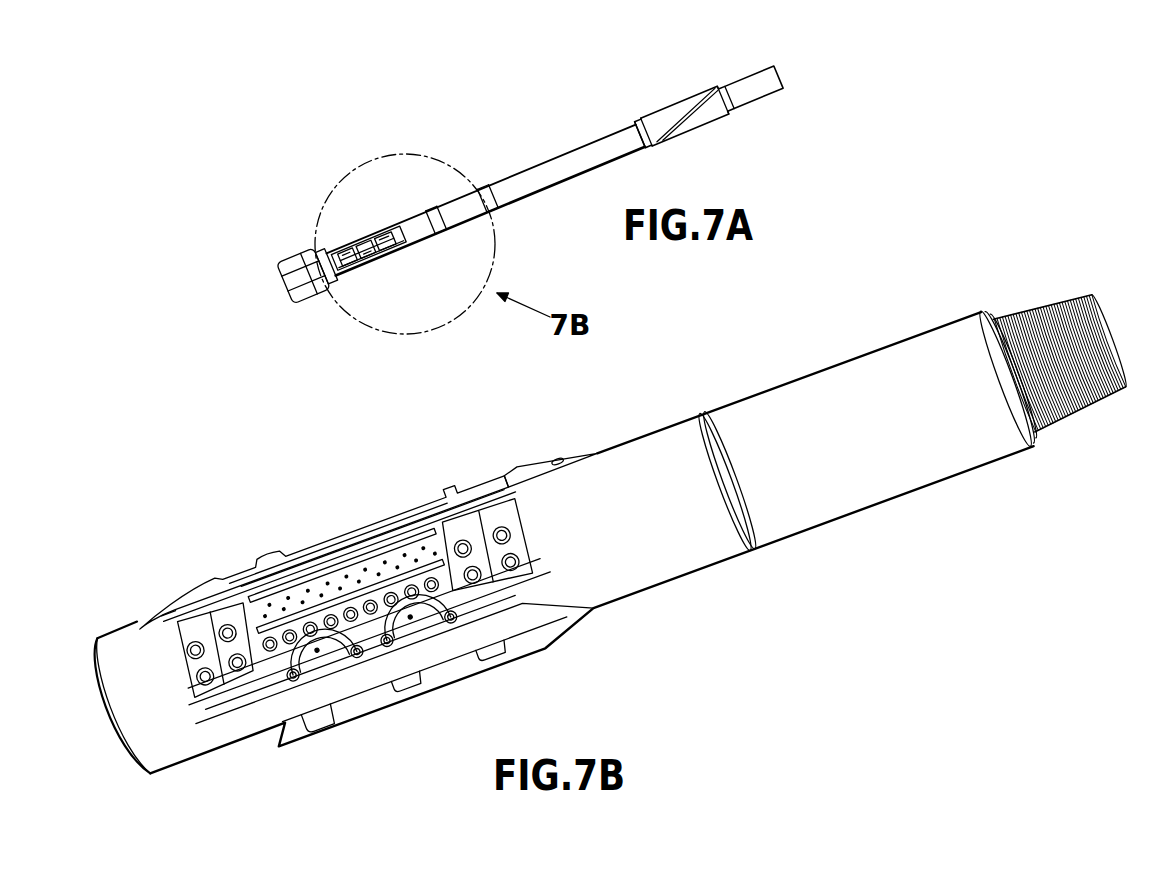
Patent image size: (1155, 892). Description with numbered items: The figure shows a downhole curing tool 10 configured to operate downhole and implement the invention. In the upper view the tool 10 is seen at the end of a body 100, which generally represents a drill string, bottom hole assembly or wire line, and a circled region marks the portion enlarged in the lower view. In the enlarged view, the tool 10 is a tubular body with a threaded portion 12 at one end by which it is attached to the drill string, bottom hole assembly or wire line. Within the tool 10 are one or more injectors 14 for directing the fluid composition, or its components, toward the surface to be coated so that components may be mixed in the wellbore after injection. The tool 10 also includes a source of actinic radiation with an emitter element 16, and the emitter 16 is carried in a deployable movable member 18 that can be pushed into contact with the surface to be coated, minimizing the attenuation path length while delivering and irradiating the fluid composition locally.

In FIG. 7A, the body 100 is at (582, 127).
In FIG. 7A, the tool 10 is at (325, 228).
In FIG. 7B, the tool 10 is at (641, 682).
In FIG. 7B, the threaded portion 12 is at (1078, 432).
In FIG. 7B, the injectors 14 is at (384, 566).
In FIG. 7B, the emitter element 16 is at (272, 648).
In FIG. 7B, the movable member 18 is at (351, 617).